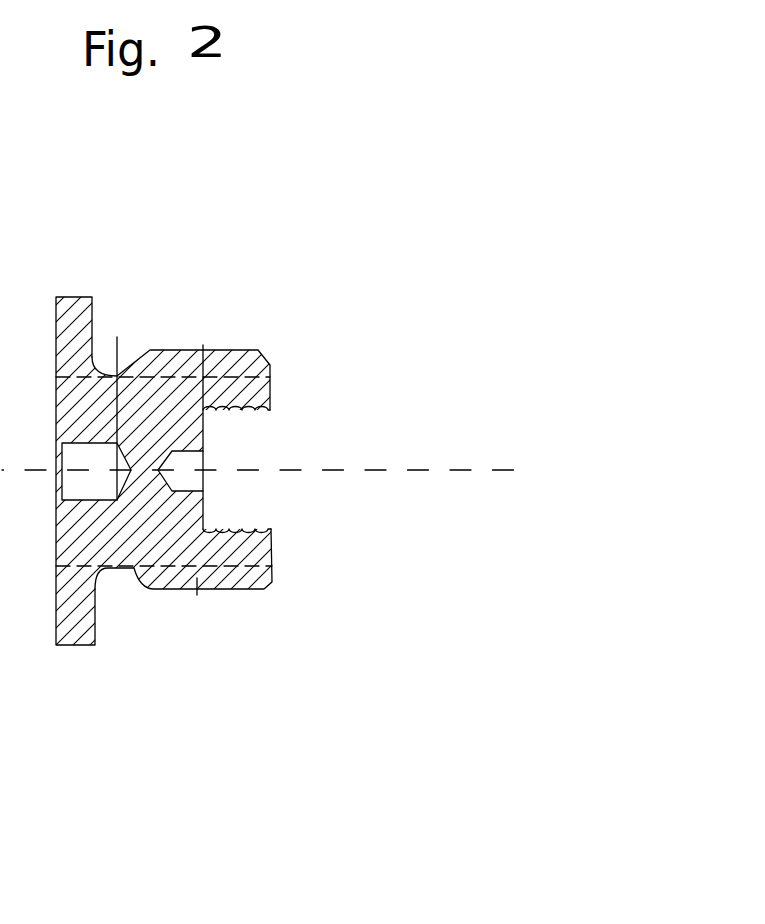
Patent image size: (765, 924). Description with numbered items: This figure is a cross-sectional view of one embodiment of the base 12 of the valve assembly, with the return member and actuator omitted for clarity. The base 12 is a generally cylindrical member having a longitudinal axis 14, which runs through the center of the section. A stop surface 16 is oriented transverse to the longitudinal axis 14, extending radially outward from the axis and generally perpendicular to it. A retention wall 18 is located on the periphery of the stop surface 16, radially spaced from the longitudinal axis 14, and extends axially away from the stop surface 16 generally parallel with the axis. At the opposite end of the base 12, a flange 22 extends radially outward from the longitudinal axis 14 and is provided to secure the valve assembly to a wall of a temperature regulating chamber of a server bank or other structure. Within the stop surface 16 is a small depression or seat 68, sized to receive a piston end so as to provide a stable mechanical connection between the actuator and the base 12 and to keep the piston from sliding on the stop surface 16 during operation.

The base 12 is at (200, 760).
The longitudinal axis 14 is at (502, 470).
The stop surface 16 is at (205, 432).
The retention wall 18 is at (242, 525).
The flange 22 is at (75, 645).
The seat 68 is at (173, 465).